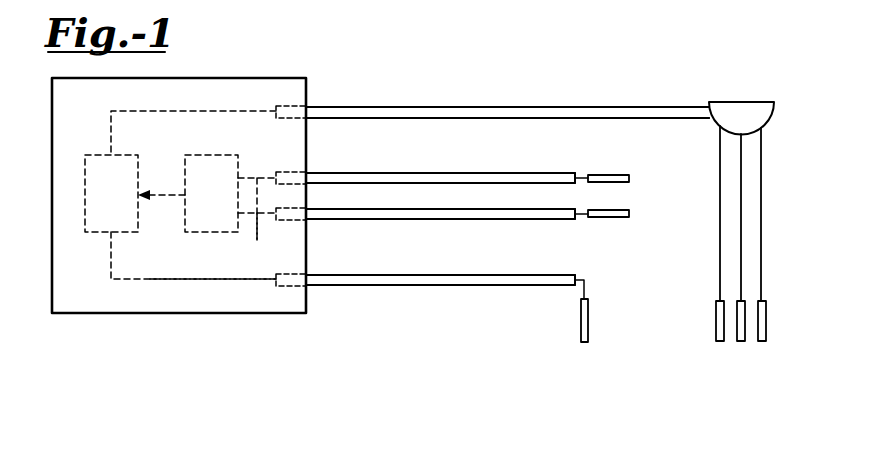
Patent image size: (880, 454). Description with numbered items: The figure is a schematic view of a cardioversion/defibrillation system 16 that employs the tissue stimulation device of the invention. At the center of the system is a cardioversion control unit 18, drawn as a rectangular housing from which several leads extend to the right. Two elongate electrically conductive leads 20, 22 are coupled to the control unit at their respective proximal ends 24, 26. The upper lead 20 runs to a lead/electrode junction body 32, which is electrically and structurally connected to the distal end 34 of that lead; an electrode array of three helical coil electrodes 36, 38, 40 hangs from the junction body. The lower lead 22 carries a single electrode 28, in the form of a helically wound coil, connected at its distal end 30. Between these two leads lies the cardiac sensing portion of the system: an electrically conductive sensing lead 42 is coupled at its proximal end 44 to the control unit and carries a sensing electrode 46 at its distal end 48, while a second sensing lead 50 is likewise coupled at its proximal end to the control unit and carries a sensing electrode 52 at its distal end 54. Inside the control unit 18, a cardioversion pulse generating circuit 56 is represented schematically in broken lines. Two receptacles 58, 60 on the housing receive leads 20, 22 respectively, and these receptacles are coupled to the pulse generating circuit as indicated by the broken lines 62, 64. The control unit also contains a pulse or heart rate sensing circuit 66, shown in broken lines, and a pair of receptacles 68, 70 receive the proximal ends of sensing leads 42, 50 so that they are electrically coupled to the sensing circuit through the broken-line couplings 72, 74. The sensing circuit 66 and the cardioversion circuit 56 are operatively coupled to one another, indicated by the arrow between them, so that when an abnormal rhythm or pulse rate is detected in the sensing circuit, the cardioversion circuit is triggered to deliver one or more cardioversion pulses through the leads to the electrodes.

The cardioversion/defibrillation system 16 is at (170, 254).
The cardioversion control unit 18 is at (85, 313).
The elongate electrically conductive lead 20 is at (487, 106).
The elongate electrically conductive lead 22 is at (442, 286).
The proximal end 24 is at (313, 106).
The proximal end 26 is at (318, 287).
The single electrode 28 is at (591, 335).
The distal end 30 is at (562, 287).
The lead/electrode junction body 32 is at (740, 101).
The distal end 34 is at (702, 103).
The helical coil electrode 36 is at (716, 330).
The helical coil electrode 38 is at (737, 337).
The helical coil electrode 40 is at (766, 330).
The sensing lead 42 is at (470, 172).
The proximal end 44 is at (316, 173).
The sensing electrode 46 is at (619, 181).
The distal end 48 is at (562, 172).
The second sensing lead 50 is at (449, 221).
The sensing electrode 52 is at (612, 220).
The distal end 54 is at (562, 221).
The cardioversion pulse generating circuit 56 is at (97, 233).
The receptacle 58 is at (289, 104).
The receptacle 60 is at (288, 286).
The coupling 62 is at (177, 111).
The coupling 64 is at (192, 280).
The heart rate sensing circuit 66 is at (190, 232).
The receptacle 68 is at (299, 172).
The receptacle 70 is at (292, 221).
The coupling 72 is at (257, 178).
The coupling 74 is at (257, 240).